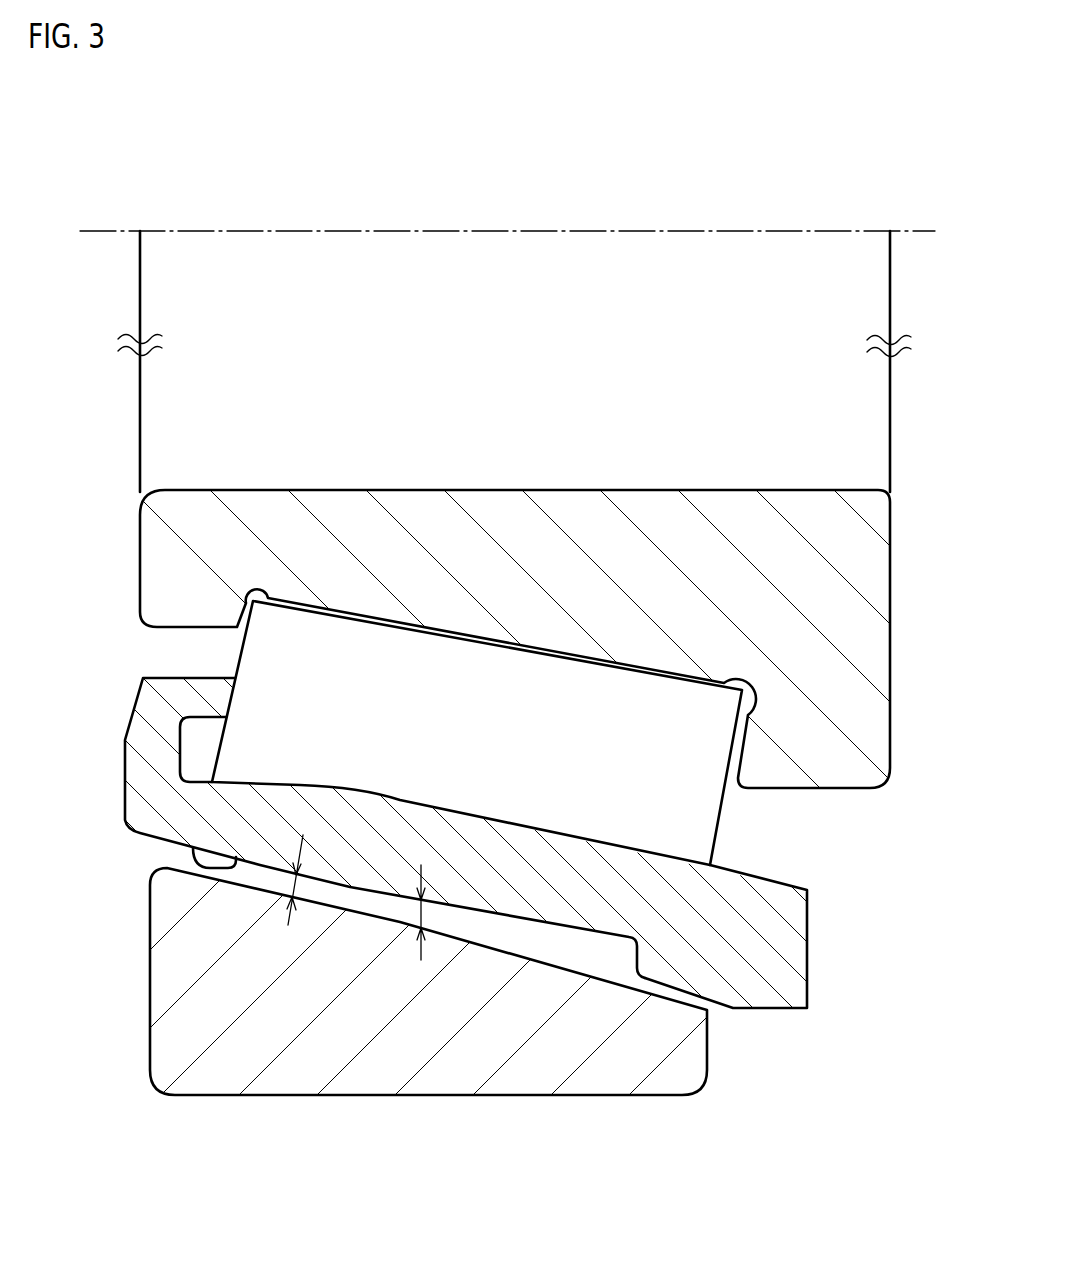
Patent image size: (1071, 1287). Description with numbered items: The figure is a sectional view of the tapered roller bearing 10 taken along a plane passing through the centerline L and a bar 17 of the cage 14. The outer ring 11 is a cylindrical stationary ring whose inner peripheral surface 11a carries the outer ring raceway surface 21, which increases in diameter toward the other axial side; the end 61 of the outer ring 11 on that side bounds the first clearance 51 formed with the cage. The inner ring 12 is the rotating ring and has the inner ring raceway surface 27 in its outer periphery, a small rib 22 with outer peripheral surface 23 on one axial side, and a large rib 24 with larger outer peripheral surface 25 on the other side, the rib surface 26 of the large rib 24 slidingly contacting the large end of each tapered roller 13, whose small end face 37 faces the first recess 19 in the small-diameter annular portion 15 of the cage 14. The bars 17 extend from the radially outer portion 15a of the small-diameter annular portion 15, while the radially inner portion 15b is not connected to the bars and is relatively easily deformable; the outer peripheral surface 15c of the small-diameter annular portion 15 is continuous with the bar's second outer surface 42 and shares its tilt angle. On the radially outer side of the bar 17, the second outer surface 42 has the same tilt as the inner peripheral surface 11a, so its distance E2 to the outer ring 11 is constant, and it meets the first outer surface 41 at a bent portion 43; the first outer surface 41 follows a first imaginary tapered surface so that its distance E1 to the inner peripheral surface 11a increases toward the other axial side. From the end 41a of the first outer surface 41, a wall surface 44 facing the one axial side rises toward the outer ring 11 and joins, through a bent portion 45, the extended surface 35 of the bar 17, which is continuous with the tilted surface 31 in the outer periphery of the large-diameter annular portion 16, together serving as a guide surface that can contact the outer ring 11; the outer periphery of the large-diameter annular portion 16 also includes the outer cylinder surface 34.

The tapered roller bearing 10 is at (136, 531).
The outer ring 11 is at (150, 983).
The inner peripheral surface of the outer ring 11a is at (560, 965).
The inner ring 12 is at (140, 588).
The tapered roller 13 is at (507, 643).
The cage 14 is at (812, 912).
The small-diameter annular portion 15 is at (127, 793).
The radially outer portion of the small-diameter annular portion 15a is at (150, 818).
The radially inner portion of the small-diameter annular portion 15b is at (197, 692).
The outer peripheral surface of the small-diameter annular portion 15c is at (153, 837).
The large-diameter annular portion 16 is at (783, 962).
The bar 17 is at (414, 797).
The first recess 19 is at (182, 757).
The outer ring raceway surface 21 is at (455, 930).
The small rib 22 is at (207, 613).
The outer peripheral surface of the small rib 23 is at (205, 627).
The large rib 24 is at (815, 762).
The outer peripheral surface of the large rib 25 is at (830, 790).
The rib surface 26 is at (735, 745).
The inner ring raceway surface 27 is at (592, 672).
The tilted surface 31 is at (717, 1005).
The outer cylinder surface 34 is at (772, 1010).
The extended surface 35 is at (667, 1003).
The small end face 37 is at (188, 725).
The first outer surface 41 is at (525, 917).
The end of the first outer surface 41a is at (640, 935).
The second outer surface 42 is at (223, 880).
The bent portion 43 is at (333, 890).
The wall surface 44 is at (633, 952).
The bent portion 45 is at (630, 978).
The first clearance 51 is at (677, 998).
The end of the outer ring 61 is at (690, 1030).
The distance E1 is at (415, 905).
The distance E2 is at (282, 878).
The centerline L is at (750, 235).